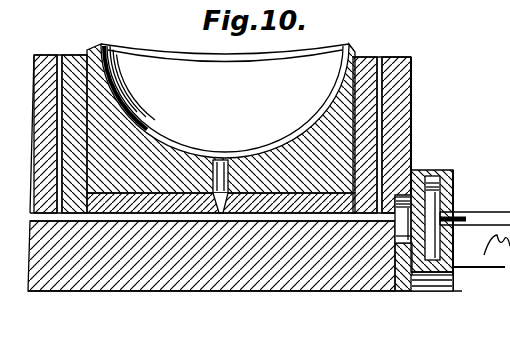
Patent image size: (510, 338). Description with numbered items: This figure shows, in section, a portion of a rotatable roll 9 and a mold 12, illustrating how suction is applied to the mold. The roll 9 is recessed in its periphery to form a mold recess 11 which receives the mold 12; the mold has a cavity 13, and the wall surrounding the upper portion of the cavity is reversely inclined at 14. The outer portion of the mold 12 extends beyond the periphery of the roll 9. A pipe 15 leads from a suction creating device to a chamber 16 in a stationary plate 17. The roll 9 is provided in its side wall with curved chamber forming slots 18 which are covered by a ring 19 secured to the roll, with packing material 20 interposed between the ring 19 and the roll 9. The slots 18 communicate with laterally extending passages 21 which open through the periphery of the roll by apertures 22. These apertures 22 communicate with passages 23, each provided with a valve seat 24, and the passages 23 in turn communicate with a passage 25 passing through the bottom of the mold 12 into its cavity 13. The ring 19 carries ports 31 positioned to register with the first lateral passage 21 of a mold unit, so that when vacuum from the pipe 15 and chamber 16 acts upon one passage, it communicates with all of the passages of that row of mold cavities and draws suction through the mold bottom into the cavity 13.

The rotatable roll 9 is at (412, 73).
The mold recess 11 is at (376, 58).
The mold 12 is at (221, 118).
The mold cavity 13 is at (223, 99).
The reversely inclined wall 14 is at (101, 43).
The pipe 15 is at (473, 212).
The chamber 16 is at (453, 191).
The stationary plate 17 is at (433, 200).
The chamber forming slot 18 is at (396, 237).
The ring 19 is at (406, 198).
The packing material 20 is at (245, 256).
The laterally extending passage 21 is at (232, 217).
The aperture 22 is at (60, 54).
The passage 23 is at (219, 215).
The valve seat 24 is at (228, 197).
The passage 25 is at (212, 173).
The port 31 is at (446, 239).